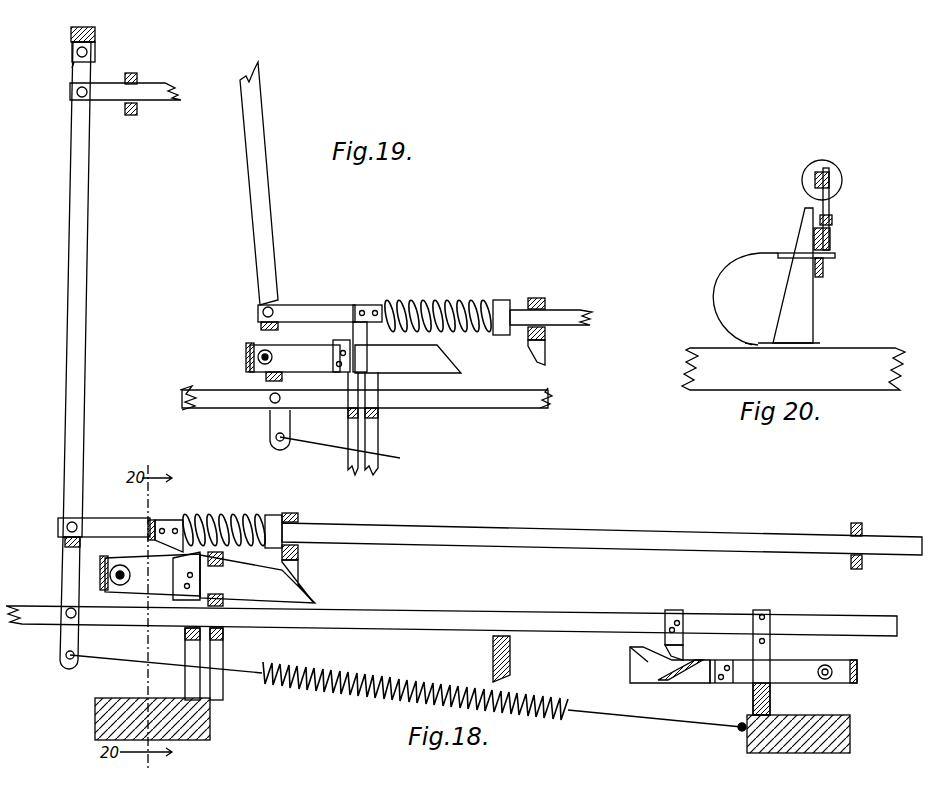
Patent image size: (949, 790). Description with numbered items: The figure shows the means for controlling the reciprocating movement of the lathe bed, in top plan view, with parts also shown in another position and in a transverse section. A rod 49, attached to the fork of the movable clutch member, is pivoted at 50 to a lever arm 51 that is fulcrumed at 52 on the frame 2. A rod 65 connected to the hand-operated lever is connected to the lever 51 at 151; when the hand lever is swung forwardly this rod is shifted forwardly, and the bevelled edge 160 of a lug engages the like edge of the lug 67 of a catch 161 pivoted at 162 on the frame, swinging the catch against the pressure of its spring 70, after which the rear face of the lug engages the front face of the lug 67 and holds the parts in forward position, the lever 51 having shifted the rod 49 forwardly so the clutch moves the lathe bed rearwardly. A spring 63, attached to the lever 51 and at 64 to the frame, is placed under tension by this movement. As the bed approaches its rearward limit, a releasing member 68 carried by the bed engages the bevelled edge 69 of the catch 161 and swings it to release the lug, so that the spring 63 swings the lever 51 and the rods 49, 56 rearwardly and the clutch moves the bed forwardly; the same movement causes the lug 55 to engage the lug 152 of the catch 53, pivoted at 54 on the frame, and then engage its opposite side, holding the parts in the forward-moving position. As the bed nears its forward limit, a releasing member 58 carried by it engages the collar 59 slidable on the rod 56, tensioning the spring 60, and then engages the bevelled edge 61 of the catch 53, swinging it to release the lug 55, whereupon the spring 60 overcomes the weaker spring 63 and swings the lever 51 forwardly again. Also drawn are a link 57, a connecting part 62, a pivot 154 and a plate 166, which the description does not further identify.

In FIG. 18, the frame 2 is at (98, 44).
In FIG. 19, the frame 2 is at (248, 351).
In FIG. 20, the frame 2 is at (793, 369).
In FIG. 18, the rod 49 is at (164, 101).
In FIG. 18, the pivot 50 is at (74, 101).
In FIG. 18, the lever arm 51 is at (89, 236).
In FIG. 19, the lever arm 51 is at (273, 234).
In FIG. 18, the fulcrum 52 is at (74, 61).
In FIG. 18, the catch 53 is at (176, 575).
In FIG. 19, the catch 53 is at (295, 358).
In FIG. 20, the catch 53 is at (814, 240).
In FIG. 19, the pivot 54 is at (262, 373).
In FIG. 18, the lug 55 is at (170, 520).
In FIG. 19, the lug 55 is at (362, 306).
In FIG. 20, the lug 55 is at (833, 210).
In FIG. 18, the rod 56 is at (415, 527).
In FIG. 19, the rod 56 is at (563, 311).
In FIG. 20, the rod 56 is at (815, 186).
In FIG. 18, the link bar 57 is at (95, 519).
In FIG. 19, the link bar 57 is at (258, 317).
In FIG. 18, the releasing member 58 is at (305, 578).
In FIG. 19, the releasing member 58 is at (548, 360).
In FIG. 18, the collar 59 is at (278, 514).
In FIG. 19, the collar 59 is at (496, 336).
In FIG. 18, the spring 60 is at (228, 514).
In FIG. 19, the spring 60 is at (432, 302).
In FIG. 18, the bevelled edge 61 is at (306, 600).
In FIG. 19, the bevelled edge 61 is at (447, 370).
In FIG. 18, the rod 62 is at (190, 633).
In FIG. 19, the rod 62 is at (352, 411).
In FIG. 20, the rod 62 is at (729, 299).
In FIG. 18, the spring 63 is at (408, 684).
In FIG. 18, the attachment point 64 is at (740, 731).
In FIG. 18, the rod 65 is at (431, 619).
In FIG. 19, the rod 65 is at (461, 408).
In FIG. 20, the rod 65 is at (826, 269).
In FIG. 18, the lug 67 is at (635, 658).
In FIG. 18, the releasing member 68 is at (509, 661).
In FIG. 18, the bevelled edge 69 is at (661, 680).
In FIG. 18, the spring 70 is at (777, 698).
In FIG. 18, the connection point 151 is at (65, 620).
In FIG. 19, the connection point 151 is at (273, 410).
In FIG. 18, the lug 152 is at (197, 556).
In FIG. 19, the lug 152 is at (341, 343).
In FIG. 18, the pivot 154 is at (121, 585).
In FIG. 18, the bevelled edge 160 is at (667, 649).
In FIG. 18, the catch 161 is at (782, 680).
In FIG. 18, the pivot 162 is at (826, 681).
In FIG. 18, the plate 166 is at (679, 635).